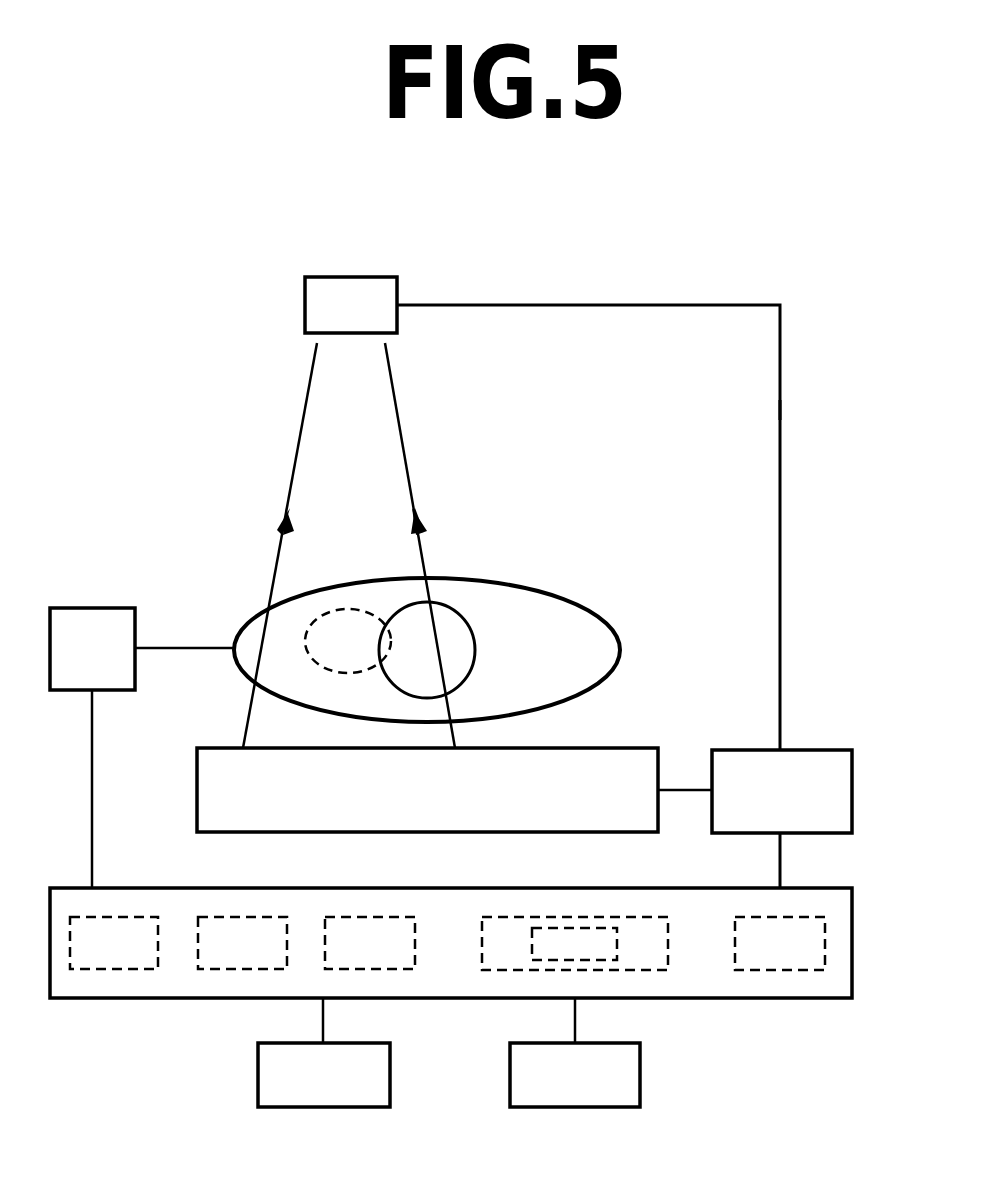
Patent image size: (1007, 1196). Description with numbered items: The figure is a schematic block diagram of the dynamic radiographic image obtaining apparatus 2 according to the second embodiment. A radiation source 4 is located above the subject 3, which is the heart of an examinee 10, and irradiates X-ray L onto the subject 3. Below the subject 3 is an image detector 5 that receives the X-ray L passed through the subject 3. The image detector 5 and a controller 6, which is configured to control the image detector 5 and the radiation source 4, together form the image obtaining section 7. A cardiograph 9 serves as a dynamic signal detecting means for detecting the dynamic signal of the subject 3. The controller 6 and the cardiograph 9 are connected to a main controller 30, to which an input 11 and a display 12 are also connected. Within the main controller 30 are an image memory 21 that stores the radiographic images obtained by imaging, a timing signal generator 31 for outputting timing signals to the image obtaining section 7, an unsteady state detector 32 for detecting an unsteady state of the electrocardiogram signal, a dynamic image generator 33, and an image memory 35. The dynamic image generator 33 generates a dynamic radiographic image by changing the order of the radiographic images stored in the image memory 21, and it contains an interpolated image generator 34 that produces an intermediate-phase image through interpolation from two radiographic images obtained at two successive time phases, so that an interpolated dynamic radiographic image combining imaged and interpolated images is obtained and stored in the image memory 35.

The dynamic radiographic image obtaining apparatus 2 is at (628, 256).
The subject 3 is at (357, 612).
The radiation source 4 is at (368, 277).
The image detector 5 is at (630, 748).
The controller 6 is at (852, 772).
The image obtaining section 7 is at (863, 537).
The cardiograph 9 is at (105, 608).
The examinee 10 is at (573, 600).
The input 11 is at (358, 1107).
The display 12 is at (608, 1107).
The image memory 21 is at (83, 970).
The main controller 30 is at (852, 925).
The timing signal generator 31 is at (208, 970).
The unsteady state detector 32 is at (405, 970).
The dynamic image generator 33 is at (487, 970).
The interpolated image generator 34 is at (597, 960).
The image memory 35 is at (755, 970).
The X-ray L is at (402, 435).